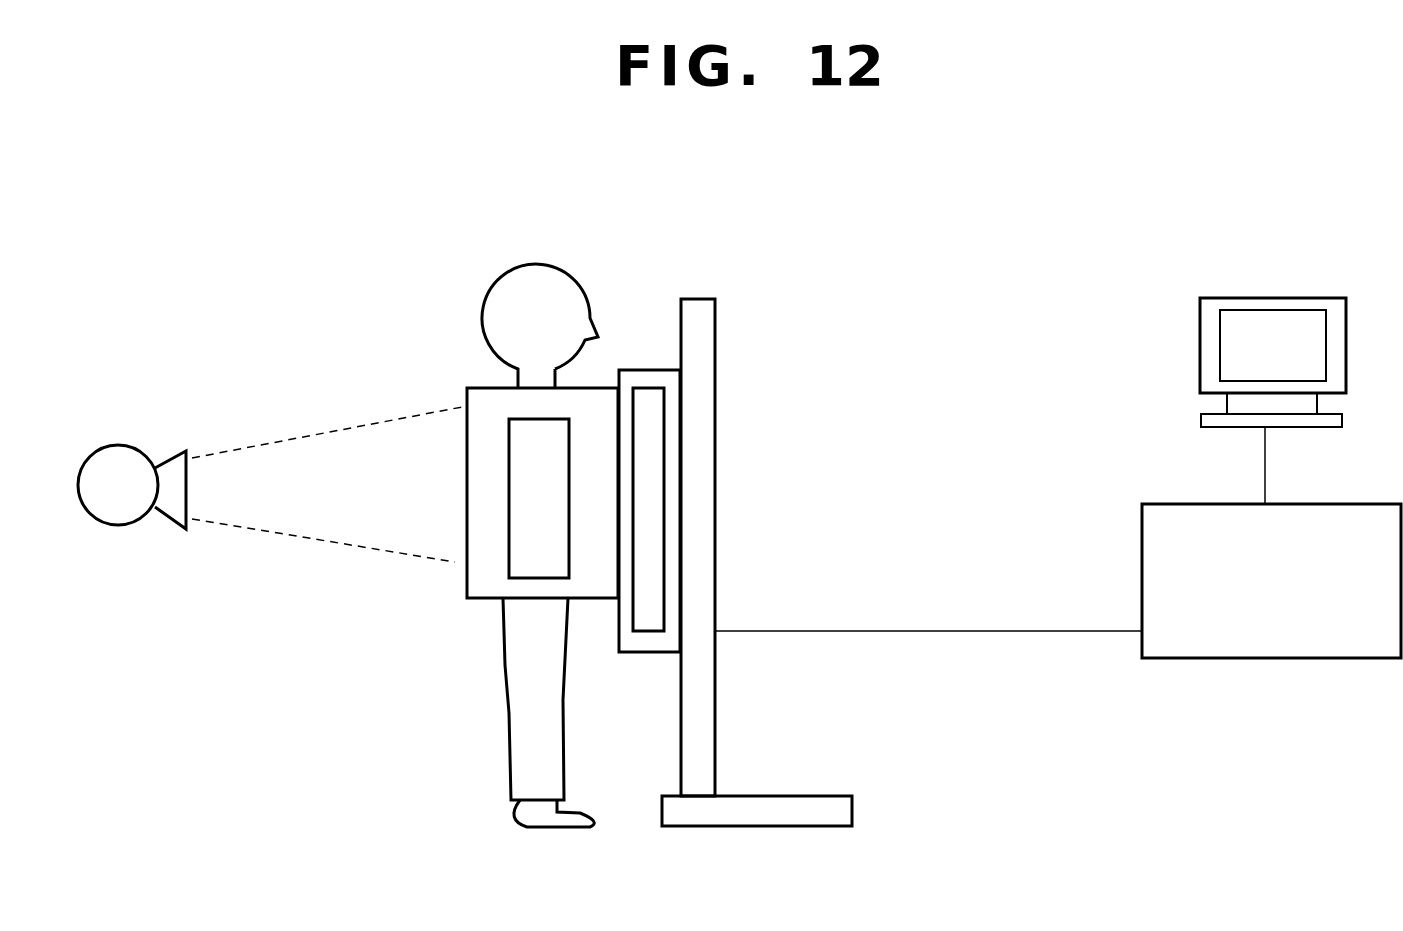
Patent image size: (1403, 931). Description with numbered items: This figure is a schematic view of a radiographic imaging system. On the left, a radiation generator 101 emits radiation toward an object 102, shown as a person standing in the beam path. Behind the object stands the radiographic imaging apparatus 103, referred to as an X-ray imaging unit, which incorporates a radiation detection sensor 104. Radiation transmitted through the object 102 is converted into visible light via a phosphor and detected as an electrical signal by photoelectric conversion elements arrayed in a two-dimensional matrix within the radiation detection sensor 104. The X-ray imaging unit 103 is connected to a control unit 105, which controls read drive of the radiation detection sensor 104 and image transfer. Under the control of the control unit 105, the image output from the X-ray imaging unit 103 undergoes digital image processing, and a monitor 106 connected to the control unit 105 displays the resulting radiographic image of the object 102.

The radiation generator 101 is at (122, 445).
The object 102 is at (495, 287).
The radiographic imaging apparatus 103 is at (682, 462).
The radiation detection sensor 104 is at (653, 525).
The control unit 105 is at (1272, 647).
The monitor 106 is at (1265, 323).